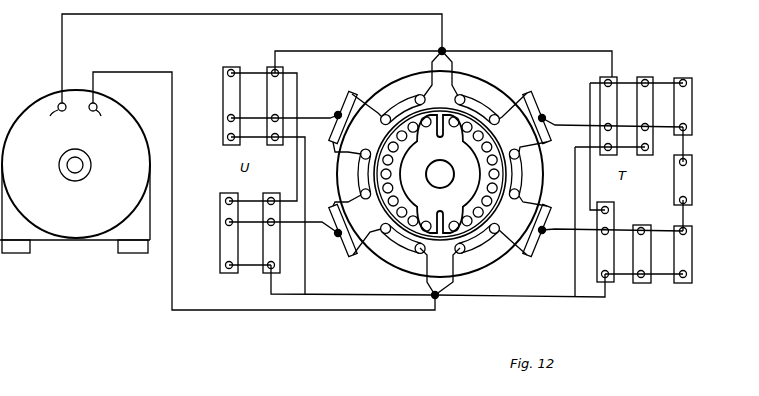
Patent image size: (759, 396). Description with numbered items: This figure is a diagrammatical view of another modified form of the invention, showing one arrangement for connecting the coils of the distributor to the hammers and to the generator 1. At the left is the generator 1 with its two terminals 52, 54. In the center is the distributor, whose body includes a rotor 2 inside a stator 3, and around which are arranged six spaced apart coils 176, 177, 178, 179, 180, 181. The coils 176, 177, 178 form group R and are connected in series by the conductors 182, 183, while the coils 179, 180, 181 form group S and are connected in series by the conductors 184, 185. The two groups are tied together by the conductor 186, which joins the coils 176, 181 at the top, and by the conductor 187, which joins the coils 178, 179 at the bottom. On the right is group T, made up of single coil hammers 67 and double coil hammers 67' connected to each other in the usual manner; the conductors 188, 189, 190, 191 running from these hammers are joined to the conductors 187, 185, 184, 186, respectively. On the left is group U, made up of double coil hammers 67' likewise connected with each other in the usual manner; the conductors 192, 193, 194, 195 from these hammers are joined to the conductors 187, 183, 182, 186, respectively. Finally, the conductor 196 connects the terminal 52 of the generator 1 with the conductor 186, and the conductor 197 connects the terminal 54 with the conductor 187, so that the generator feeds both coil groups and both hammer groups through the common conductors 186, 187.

The generator 1 is at (75, 171).
The rotor 2 is at (440, 174).
The stator 3 is at (484, 83).
The terminal 52 is at (56, 118).
The terminal 54 is at (96, 118).
The single coil hammer 67 is at (698, 180).
The double coil hammer 67' is at (439, 167).
The coil 176 is at (410, 90).
The coil 177 is at (362, 170).
The coil 178 is at (396, 257).
The coil 179 is at (484, 257).
The coil 180 is at (522, 173).
The coil 181 is at (477, 108).
The conductor 182 is at (352, 92).
The conductor 183 is at (349, 232).
The conductor 184 is at (534, 104).
The conductor 185 is at (538, 253).
The conductor 186 is at (453, 66).
The conductor 187 is at (426, 288).
The conductor 188 is at (514, 297).
The conductor 189 is at (552, 225).
The conductor 190 is at (556, 121).
The conductor 191 is at (520, 51).
The conductor 192 is at (320, 296).
The conductor 193 is at (311, 213).
The conductor 194 is at (318, 114).
The conductor 195 is at (318, 51).
The conductor 196 is at (305, 18).
The conductor 197 is at (282, 313).